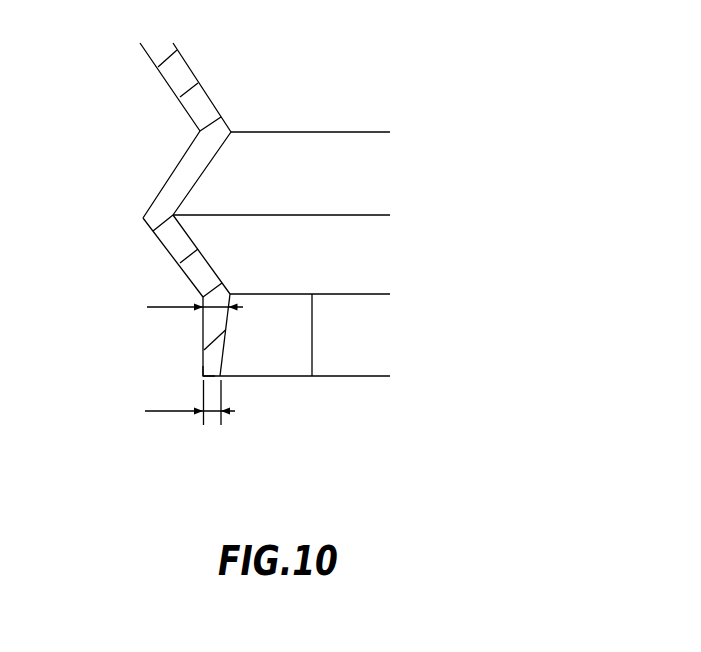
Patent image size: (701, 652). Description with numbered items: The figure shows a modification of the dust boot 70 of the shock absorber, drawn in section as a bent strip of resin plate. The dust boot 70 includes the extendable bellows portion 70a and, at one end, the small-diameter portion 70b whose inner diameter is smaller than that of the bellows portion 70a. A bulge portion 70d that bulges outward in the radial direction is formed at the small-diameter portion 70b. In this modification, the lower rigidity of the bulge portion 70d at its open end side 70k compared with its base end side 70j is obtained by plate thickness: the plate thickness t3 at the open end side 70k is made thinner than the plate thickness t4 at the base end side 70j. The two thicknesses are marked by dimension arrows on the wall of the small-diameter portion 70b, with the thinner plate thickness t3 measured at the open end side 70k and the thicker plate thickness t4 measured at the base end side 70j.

The dust boot 70 is at (229, 170).
The bellows portion 70a is at (187, 173).
The small-diameter portion 70b is at (335, 358).
The base end side 70j is at (197, 315).
The bulge portion 70d is at (204, 338).
The open end side 70k is at (198, 372).
The plate thickness at the open end side t3 is at (190, 402).
The plate thickness at the base end side t4 is at (195, 294).